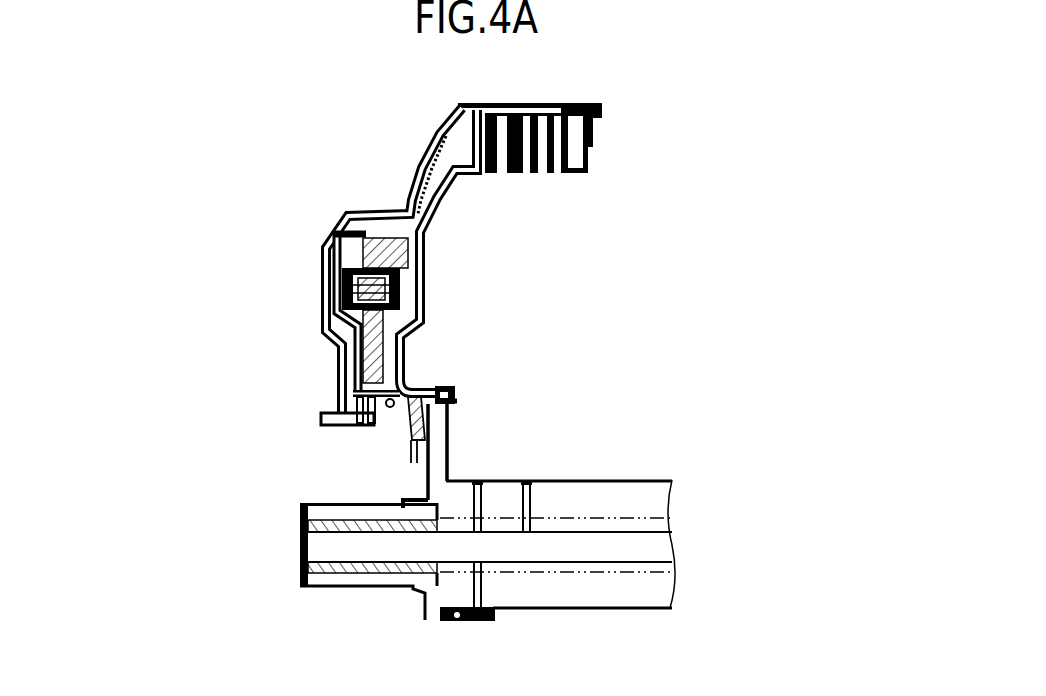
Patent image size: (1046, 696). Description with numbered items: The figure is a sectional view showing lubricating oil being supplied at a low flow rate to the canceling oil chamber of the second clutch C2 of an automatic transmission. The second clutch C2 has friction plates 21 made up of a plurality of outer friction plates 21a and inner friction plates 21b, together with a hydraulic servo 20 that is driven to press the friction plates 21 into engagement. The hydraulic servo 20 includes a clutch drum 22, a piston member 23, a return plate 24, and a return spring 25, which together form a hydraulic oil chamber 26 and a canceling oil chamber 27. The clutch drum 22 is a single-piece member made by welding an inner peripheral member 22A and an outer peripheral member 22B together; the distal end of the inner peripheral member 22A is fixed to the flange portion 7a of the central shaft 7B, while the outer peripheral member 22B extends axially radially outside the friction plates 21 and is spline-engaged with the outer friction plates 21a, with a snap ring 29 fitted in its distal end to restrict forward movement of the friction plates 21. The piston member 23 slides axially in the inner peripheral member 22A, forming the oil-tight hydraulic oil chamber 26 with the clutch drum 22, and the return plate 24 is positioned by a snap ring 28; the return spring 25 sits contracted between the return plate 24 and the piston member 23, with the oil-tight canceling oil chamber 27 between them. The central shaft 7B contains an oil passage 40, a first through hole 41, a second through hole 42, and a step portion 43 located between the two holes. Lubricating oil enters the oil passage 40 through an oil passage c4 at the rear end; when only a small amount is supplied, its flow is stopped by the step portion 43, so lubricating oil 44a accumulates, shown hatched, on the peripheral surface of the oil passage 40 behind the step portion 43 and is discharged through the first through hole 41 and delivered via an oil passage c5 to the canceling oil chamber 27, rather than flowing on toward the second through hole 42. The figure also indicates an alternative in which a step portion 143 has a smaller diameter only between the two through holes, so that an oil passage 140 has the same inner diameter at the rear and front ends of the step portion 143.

The hydraulic servo 20 is at (275, 292).
The friction plates 21 is at (549, 200).
The outer friction plates 21a is at (497, 177).
The inner friction plates 21b is at (579, 175).
The clutch drum 22 is at (404, 139).
The inner peripheral member 22A is at (320, 258).
The outer peripheral member 22B is at (413, 183).
The piston member 23 is at (440, 190).
The return plate 24 is at (396, 352).
The return spring 25 is at (380, 281).
The hydraulic oil chamber 26 is at (347, 333).
The canceling oil chamber 27 is at (380, 377).
The snap ring 28 is at (457, 397).
The snap ring 29 is at (590, 150).
The second clutch C2 is at (636, 114).
The flange portion 7a is at (447, 457).
The central shaft 7B is at (603, 490).
The oil passage 40 is at (347, 555).
The first through hole 41 is at (412, 508).
The second through hole 42 is at (483, 503).
The step portion 43 is at (428, 565).
The lubricating oil 44a is at (347, 524).
The oil passage c4 is at (275, 543).
The oil passage c5 is at (417, 488).
The oil passage 140 is at (637, 572).
The step portion 143 is at (455, 566).